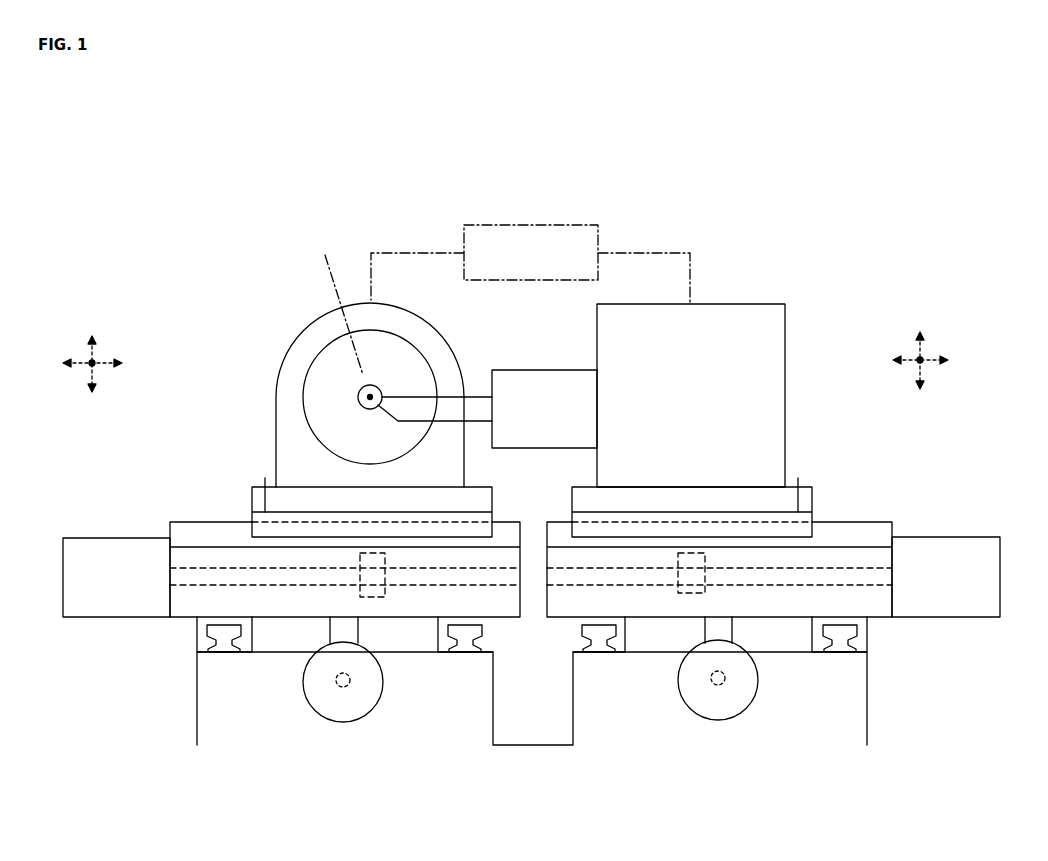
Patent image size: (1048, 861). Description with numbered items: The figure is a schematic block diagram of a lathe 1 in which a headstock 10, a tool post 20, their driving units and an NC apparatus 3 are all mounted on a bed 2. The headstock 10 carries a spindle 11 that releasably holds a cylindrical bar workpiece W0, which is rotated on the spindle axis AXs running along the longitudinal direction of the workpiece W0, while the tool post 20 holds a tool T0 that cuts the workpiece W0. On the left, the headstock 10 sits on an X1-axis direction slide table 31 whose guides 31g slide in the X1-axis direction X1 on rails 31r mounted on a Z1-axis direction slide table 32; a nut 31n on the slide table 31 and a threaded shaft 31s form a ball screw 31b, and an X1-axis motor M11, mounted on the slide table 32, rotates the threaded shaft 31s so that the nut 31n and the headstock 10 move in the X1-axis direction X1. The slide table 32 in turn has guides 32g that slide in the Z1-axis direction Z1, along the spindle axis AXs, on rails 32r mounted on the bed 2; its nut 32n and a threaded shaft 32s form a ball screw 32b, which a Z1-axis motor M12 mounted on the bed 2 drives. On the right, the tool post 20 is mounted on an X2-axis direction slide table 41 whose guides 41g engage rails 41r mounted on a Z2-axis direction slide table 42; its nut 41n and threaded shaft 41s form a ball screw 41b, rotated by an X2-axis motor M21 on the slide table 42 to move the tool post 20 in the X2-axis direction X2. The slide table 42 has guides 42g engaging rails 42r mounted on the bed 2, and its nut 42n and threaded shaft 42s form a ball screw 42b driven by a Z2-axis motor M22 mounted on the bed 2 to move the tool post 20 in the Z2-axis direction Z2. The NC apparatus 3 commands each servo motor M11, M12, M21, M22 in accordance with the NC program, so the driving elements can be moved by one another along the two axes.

The lathe 1 is at (90, 229).
The bed 2 is at (520, 745).
The NC apparatus 3 is at (540, 264).
The headstock 10 is at (292, 338).
The spindle 11 is at (337, 340).
The workpiece W0 is at (358, 392).
The spindle axis AXs is at (331, 304).
The tool T0 is at (397, 395).
The tool post 20 is at (792, 318).
The X1-axis direction slide table 31 is at (248, 485).
The guides 31g is at (266, 480).
The rails 31r is at (198, 522).
The threaded shaft 31s is at (187, 585).
The ball screw 31b is at (240, 563).
The nut 31n is at (385, 600).
The Z1-axis direction slide table 32 is at (498, 618).
The guides 32g is at (193, 632).
The rails 32r is at (193, 648).
The nut 32n is at (330, 628).
The ball screw 32b is at (332, 688).
The threaded shaft 32s is at (344, 698).
The X1-axis motor M11 is at (112, 538).
The Z1-axis motor M12 is at (365, 718).
The X2-axis direction slide table 41 is at (817, 482).
The guides 41g is at (798, 480).
The rails 41r is at (868, 520).
The threaded shaft 41s is at (867, 585).
The ball screw 41b is at (830, 562).
The nut 41n is at (672, 600).
The Z2-axis direction slide table 42 is at (873, 620).
The guides 42g is at (628, 628).
The rails 42r is at (600, 647).
The nut 42n is at (733, 633).
The ball screw 42b is at (732, 690).
The threaded shaft 42s is at (713, 690).
The X2-axis motor M21 is at (953, 537).
The Z2-axis motor M22 is at (740, 710).
The Z1-axis direction Z1 is at (96, 359).
The X1-axis direction X1 is at (107, 364).
The Z2-axis direction Z2 is at (925, 356).
The X2-axis direction X2 is at (935, 361).